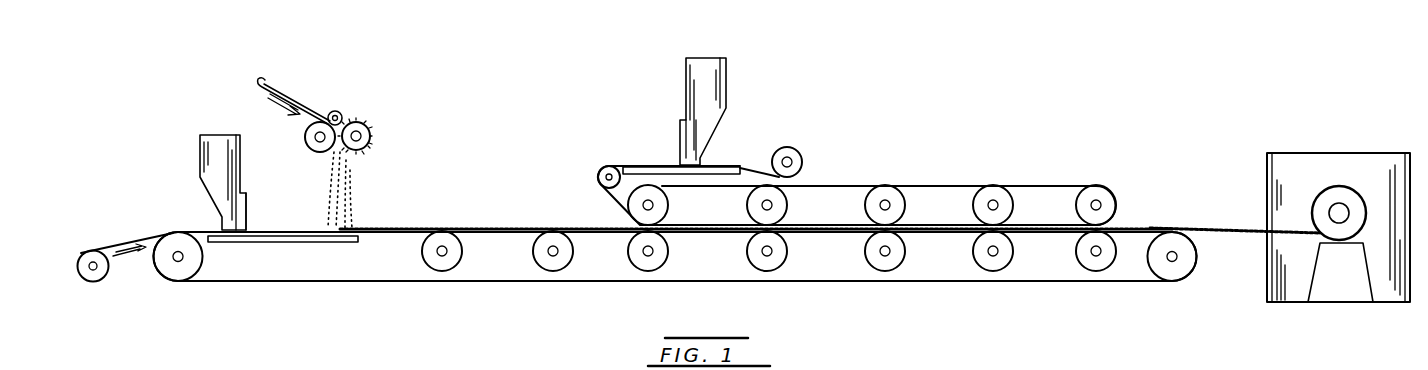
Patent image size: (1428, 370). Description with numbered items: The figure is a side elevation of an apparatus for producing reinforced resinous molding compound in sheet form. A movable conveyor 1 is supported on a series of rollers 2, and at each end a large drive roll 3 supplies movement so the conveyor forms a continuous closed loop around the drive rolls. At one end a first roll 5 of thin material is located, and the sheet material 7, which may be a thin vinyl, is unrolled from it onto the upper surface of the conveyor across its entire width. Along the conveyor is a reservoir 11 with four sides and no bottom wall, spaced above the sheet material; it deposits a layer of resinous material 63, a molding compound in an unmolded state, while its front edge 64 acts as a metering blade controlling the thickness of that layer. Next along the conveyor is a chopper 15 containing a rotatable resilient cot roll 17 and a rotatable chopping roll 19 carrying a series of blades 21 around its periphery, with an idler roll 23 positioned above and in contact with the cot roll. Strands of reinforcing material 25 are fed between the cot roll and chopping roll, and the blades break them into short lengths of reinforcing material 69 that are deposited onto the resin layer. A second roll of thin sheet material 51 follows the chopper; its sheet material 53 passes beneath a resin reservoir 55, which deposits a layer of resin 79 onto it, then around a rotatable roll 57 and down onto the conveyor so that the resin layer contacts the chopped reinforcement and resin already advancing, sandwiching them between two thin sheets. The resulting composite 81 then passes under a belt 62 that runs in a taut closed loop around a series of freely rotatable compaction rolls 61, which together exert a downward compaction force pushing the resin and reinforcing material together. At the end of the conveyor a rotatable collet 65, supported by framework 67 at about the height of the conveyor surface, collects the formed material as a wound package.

The movable conveyor 1 is at (337, 283).
The rollers 2 is at (443, 262).
The drive roll 3 is at (178, 268).
The first roll of thin material 5 is at (90, 282).
The sheet material 7 is at (137, 243).
The reservoir 11 is at (200, 142).
The chopper 15 is at (335, 86).
The cot roll 17 is at (310, 130).
The chopping roll 19 is at (366, 144).
The blades 21 is at (372, 130).
The idler roll 23 is at (340, 112).
The reinforcing material 25 is at (282, 95).
The second roll of thin sheet material 51 is at (800, 150).
The sheet material 53 is at (758, 168).
The resin reservoir 55 is at (686, 72).
The rotatable roll 57 is at (598, 177).
The compaction rolls 61 is at (668, 206).
The belt 62 is at (1034, 186).
The layer of resinous material 63 is at (295, 233).
The front edge 64 is at (248, 229).
The collet 65 is at (1340, 186).
The framework 67 is at (1268, 139).
The short lengths of reinforcing material 69 is at (345, 196).
The layer of resin 79 is at (626, 166).
The composite 81 is at (1145, 226).